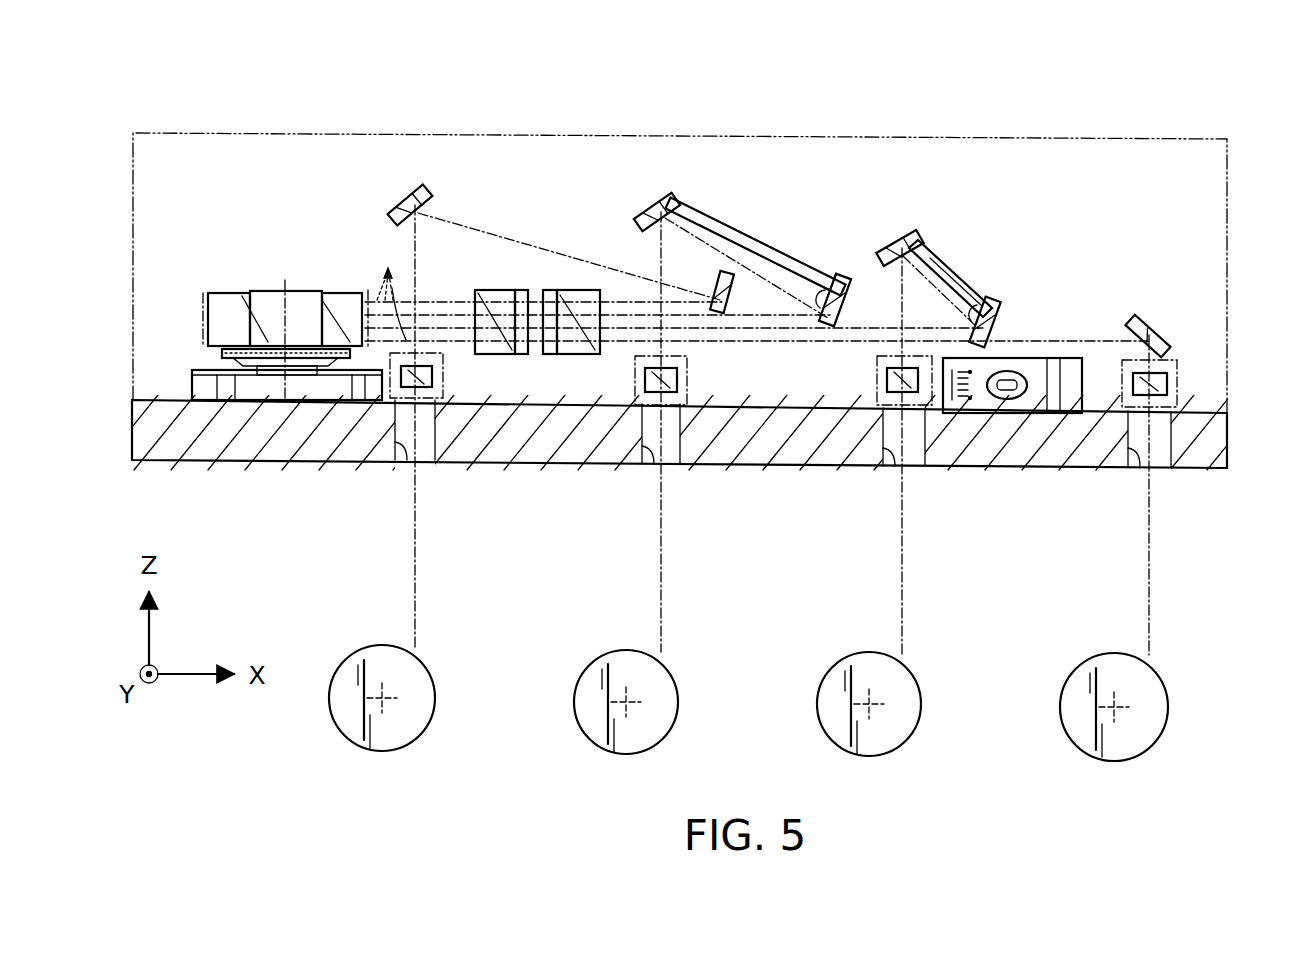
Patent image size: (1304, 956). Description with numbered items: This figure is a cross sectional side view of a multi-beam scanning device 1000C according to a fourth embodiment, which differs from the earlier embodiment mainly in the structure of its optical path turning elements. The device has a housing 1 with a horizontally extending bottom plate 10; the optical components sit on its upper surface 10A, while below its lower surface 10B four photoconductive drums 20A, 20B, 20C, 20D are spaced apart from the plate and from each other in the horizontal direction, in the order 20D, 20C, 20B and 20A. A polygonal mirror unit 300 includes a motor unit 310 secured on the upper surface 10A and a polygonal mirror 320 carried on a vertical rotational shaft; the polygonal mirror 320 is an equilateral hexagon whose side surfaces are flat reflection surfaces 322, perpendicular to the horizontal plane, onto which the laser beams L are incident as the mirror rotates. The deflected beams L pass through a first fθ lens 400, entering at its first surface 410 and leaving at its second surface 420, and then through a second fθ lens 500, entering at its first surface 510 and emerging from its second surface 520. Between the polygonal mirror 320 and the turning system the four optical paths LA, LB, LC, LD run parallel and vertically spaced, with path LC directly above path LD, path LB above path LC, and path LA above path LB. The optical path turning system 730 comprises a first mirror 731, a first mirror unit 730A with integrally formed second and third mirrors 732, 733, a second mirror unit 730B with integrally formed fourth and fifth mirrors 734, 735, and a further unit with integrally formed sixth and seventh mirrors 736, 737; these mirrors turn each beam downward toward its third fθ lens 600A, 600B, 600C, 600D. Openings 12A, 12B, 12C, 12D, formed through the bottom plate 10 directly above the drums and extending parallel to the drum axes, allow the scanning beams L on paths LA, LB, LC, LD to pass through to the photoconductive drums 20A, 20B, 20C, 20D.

The housing 1 is at (1100, 136).
The multi-beam scanning device 1000C is at (997, 100).
The bottom plate 10 is at (1195, 471).
The upper surface 10A is at (1226, 413).
The lower surface 10B is at (1226, 468).
The opening 12A is at (1136, 464).
The opening 12B is at (886, 464).
The opening 12C is at (644, 458).
The opening 12D is at (400, 458).
The photoconductive drum 20A is at (1096, 666).
The photoconductive drum 20B is at (852, 664).
The photoconductive drum 20C is at (609, 661).
The photoconductive drum 20D is at (364, 658).
The polygonal mirror unit 300 is at (265, 284).
The motor unit 310 is at (194, 384).
The polygonal mirror 320 is at (338, 291).
The reflection surface 322 is at (230, 302).
The first fθ lens 400 is at (513, 296).
The first surface 410 is at (475, 291).
The second surface 420 is at (530, 352).
The second fθ lens 500 is at (578, 274).
The first surface 510 is at (548, 290).
The second surface 520 is at (601, 294).
The third fθ lens 600A is at (1126, 374).
The third fθ lens 600B is at (888, 380).
The third fθ lens 600C is at (678, 378).
The third fθ lens 600D is at (434, 375).
The optical path turning system 730 is at (1190, 302).
The first mirror unit 730A is at (969, 271).
The second mirror unit 730B is at (750, 242).
The first mirror 731 is at (1154, 318).
The second mirror 732 is at (992, 302).
The third mirror 733 is at (906, 242).
The fourth mirror 734 is at (832, 286).
The fifth mirror 735 is at (678, 205).
The sixth mirror 736 is at (714, 292).
The seventh mirror 737 is at (401, 200).
The laser beams L is at (391, 290).
The optical path LA is at (1152, 605).
The optical path LB is at (905, 605).
The optical path LC is at (664, 602).
The optical path LD is at (418, 598).